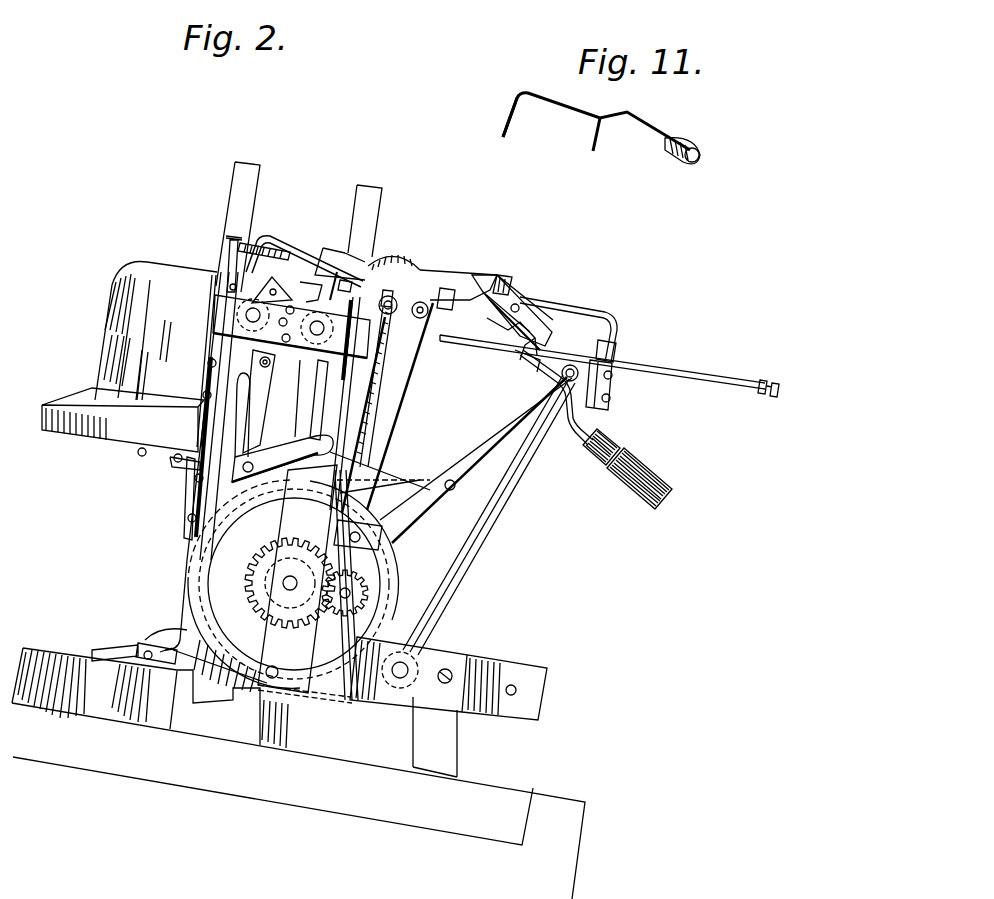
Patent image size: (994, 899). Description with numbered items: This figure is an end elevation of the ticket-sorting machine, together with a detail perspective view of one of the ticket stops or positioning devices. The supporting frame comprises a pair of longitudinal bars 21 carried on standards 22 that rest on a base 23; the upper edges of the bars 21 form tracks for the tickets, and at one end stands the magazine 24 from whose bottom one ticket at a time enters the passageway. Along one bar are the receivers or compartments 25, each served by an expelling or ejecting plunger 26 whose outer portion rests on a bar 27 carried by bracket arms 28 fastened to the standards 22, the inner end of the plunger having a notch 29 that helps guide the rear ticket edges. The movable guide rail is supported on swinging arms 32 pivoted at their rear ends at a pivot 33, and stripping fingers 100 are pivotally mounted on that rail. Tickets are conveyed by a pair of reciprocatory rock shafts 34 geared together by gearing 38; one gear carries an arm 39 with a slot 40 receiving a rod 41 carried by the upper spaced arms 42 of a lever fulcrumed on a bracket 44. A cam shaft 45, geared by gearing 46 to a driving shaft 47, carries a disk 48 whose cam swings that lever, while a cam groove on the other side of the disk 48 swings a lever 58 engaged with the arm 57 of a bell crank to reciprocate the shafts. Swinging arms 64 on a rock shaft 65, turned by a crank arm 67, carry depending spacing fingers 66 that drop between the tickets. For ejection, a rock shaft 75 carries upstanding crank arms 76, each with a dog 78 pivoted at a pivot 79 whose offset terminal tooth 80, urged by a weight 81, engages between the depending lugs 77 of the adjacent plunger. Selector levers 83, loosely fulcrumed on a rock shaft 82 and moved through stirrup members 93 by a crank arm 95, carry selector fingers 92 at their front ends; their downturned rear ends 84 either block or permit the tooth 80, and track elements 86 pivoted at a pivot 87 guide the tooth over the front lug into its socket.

In FIG. 2, the longitudinal bars 21 is at (218, 350).
In FIG. 2, the standards 22 is at (205, 477).
In FIG. 2, the base 23 is at (58, 650).
In FIG. 2, the magazine 24 is at (252, 175).
In FIG. 2, the receivers or compartments 25 is at (122, 305).
In FIG. 2, the expelling or ejecting plunger 26 is at (720, 373).
In FIG. 2, the bar 27 is at (610, 402).
In FIG. 2, the bracket arms 28 is at (488, 452).
In FIG. 2, the notches 29 is at (375, 378).
In FIG. 2, the swinging arms 32 is at (573, 300).
In FIG. 2, the pivot 33 is at (618, 350).
In FIG. 2, the reciprocatory rock shafts 34 is at (291, 327).
In FIG. 2, the gearing 38 is at (287, 290).
In FIG. 2, the arm 39 is at (275, 364).
In FIG. 2, the slot 40 is at (285, 401).
In FIG. 2, the rod 41 is at (236, 378).
In FIG. 2, the upper spaced arms of lever 42 is at (258, 434).
In FIG. 2, the bracket 44 is at (282, 458).
In FIG. 2, the cam shaft 45 is at (290, 583).
In FIG. 2, the gearing 46 is at (408, 578).
In FIG. 2, the driving shaft 47 is at (305, 584).
In FIG. 2, the disk 48 is at (285, 585).
In FIG. 2, the arm of bell crank 57 is at (148, 648).
In FIG. 2, the lever 58 is at (166, 660).
In FIG. 2, the swinging arms 64 is at (292, 252).
In FIG. 11, the swinging arms 64 is at (545, 97).
In FIG. 2, the rock shaft 65 is at (426, 318).
In FIG. 2, the spacing fingers 66 is at (262, 240).
In FIG. 11, the spacing fingers 66 is at (510, 128).
In FIG. 2, the crank arm 67 is at (384, 437).
In FIG. 2, the rock shaft 75 is at (405, 668).
In FIG. 2, the upstanding crank arms 76 is at (505, 492).
In FIG. 2, the depending lugs 77 is at (520, 350).
In FIG. 2, the dog 78 is at (569, 415).
In FIG. 2, the pivot 79 is at (563, 367).
In FIG. 2, the offset terminal tooth 80 is at (528, 360).
In FIG. 2, the weight 81 is at (622, 452).
In FIG. 2, the rock shaft 82 is at (395, 315).
In FIG. 2, the controlling or selector levers 83 is at (498, 282).
In FIG. 2, the downturned rear ends 84 is at (556, 336).
In FIG. 2, the track elements 86 is at (500, 325).
In FIG. 2, the pivot 87 is at (520, 306).
In FIG. 2, the selector fingers 92 is at (315, 270).
In FIG. 2, the stirrup member 93 is at (432, 274).
In FIG. 2, the crank arm 95 is at (398, 388).
In FIG. 2, the swinging fingers 100 is at (209, 266).